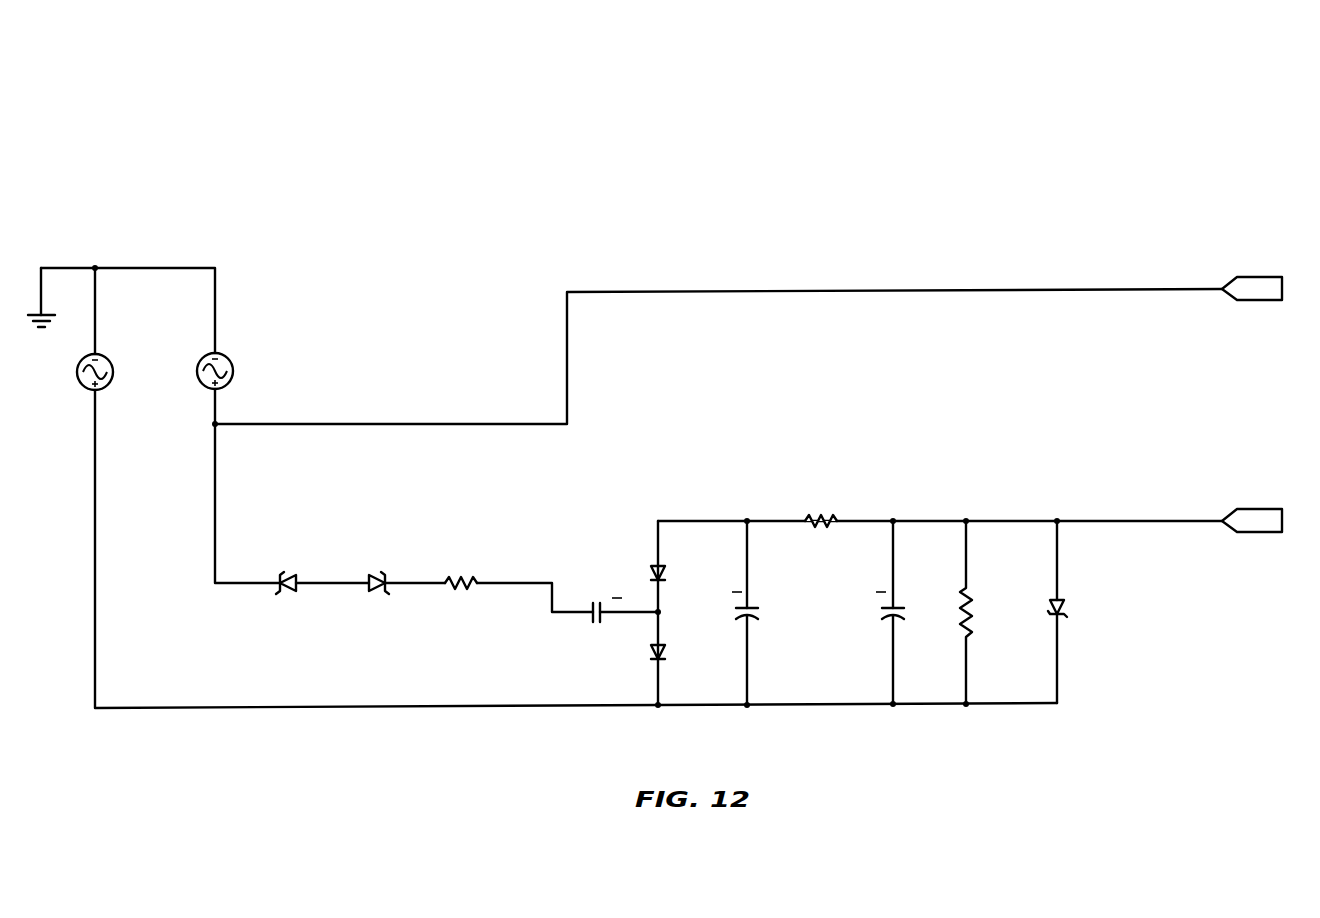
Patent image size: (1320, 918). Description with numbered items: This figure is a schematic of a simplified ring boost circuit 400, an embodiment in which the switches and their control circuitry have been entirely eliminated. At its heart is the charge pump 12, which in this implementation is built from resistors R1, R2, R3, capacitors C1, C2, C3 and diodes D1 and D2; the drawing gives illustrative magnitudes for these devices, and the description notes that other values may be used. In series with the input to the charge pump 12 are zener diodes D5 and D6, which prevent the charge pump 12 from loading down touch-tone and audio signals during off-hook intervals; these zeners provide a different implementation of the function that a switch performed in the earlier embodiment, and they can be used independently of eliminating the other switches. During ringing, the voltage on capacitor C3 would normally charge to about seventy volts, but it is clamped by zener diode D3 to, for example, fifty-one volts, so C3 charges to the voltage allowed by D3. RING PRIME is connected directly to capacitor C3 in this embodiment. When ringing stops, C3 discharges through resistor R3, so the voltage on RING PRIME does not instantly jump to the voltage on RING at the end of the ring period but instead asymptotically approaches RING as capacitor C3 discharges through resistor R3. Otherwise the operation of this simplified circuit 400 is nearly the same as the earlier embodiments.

The circuit 400 is at (722, 196).
The charge pump 12 is at (890, 437).
The diode D1 is at (675, 654).
The diode D2 is at (675, 576).
The zener diode D3 is at (1076, 610).
The zener diode D5 is at (288, 585).
The zener diode D6 is at (378, 585).
The resistor R1 is at (460, 585).
The resistor R2 is at (822, 526).
The resistor R3 is at (990, 612).
The capacitor C1 is at (595, 614).
The capacitor C2 is at (768, 613).
The capacitor C3 is at (905, 612).